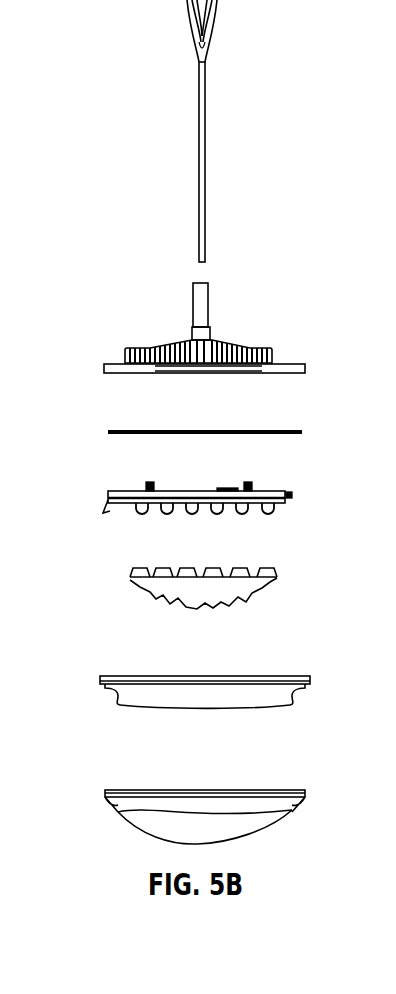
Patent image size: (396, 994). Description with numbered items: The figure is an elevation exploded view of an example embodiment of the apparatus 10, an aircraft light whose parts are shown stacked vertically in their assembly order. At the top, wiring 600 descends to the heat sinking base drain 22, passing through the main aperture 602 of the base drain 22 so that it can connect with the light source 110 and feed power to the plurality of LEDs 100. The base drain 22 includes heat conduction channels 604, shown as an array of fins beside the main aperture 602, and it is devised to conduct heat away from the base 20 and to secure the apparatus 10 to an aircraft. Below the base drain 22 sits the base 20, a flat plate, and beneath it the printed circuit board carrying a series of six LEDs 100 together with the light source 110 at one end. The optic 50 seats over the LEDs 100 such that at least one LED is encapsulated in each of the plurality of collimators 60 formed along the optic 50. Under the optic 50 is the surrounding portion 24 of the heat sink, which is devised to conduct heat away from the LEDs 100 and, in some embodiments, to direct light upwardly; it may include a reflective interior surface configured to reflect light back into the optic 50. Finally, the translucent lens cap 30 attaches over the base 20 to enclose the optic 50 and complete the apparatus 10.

The apparatus 10 is at (79, 263).
The wiring 600 is at (205, 155).
The main aperture 602 is at (208, 342).
The heat conduction channels 604 is at (168, 348).
The heat sinking base drain 22 is at (297, 363).
The base 20 is at (302, 430).
The LEDs 100 is at (141, 514).
The light source 110 is at (292, 495).
The collimators 60 is at (245, 559).
The optic 50 is at (277, 578).
The surrounding portion of heat sink 24 is at (283, 697).
The translucent lens cap 30 is at (257, 820).